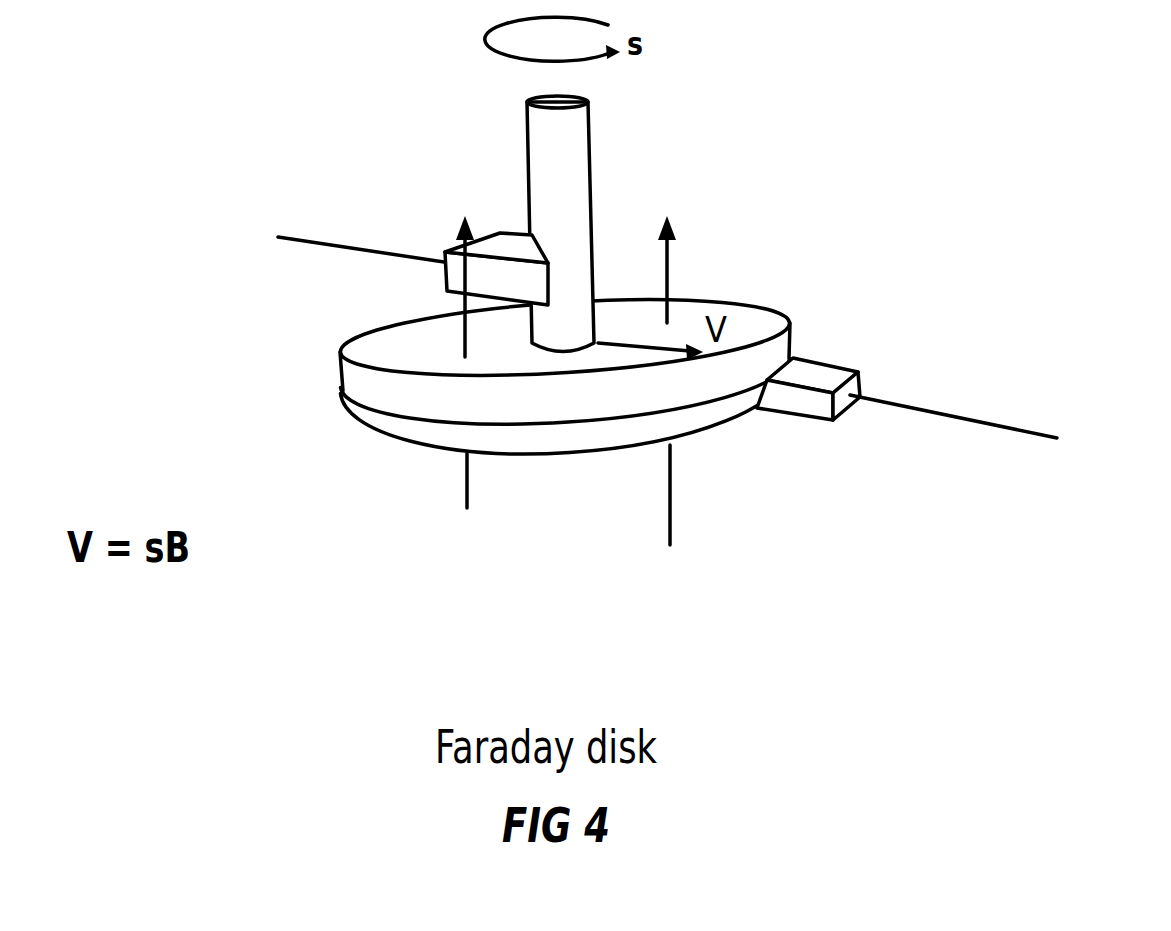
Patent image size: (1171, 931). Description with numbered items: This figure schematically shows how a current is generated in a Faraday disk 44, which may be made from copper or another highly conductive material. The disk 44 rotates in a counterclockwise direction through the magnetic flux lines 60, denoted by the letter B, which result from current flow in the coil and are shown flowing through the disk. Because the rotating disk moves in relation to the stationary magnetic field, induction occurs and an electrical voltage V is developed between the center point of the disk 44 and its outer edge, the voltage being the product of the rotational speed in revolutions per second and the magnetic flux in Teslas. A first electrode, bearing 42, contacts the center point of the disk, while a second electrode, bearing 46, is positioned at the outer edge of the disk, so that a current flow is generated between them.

The bearing 42 is at (521, 233).
The Faraday disk 44 is at (790, 313).
The bearing 46 is at (775, 414).
The magnetic flux lines 60 is at (677, 233).